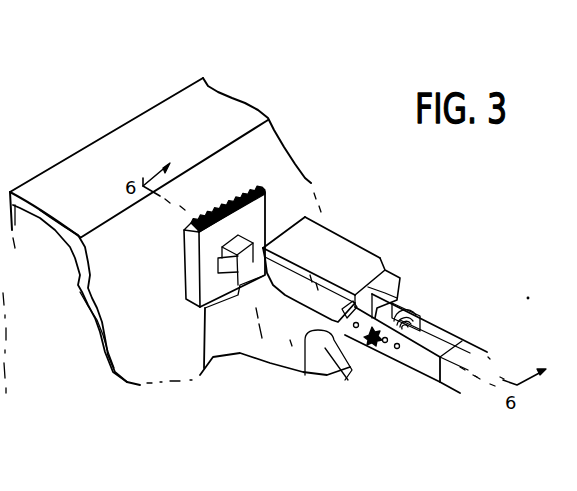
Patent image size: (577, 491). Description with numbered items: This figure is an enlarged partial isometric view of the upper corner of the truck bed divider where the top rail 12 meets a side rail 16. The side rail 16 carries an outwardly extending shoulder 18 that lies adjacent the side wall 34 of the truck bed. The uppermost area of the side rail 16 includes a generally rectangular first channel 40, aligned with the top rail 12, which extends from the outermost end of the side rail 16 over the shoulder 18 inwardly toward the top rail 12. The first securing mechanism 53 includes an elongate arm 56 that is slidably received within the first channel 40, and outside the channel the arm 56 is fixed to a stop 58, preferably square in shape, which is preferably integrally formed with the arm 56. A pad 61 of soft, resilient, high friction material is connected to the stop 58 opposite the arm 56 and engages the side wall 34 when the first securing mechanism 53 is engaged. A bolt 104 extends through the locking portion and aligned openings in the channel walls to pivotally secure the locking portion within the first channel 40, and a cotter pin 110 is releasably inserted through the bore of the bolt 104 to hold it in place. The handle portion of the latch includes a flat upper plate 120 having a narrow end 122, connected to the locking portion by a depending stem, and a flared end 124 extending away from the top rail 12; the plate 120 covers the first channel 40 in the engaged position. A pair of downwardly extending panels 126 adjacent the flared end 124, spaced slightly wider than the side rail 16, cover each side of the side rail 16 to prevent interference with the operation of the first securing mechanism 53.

The top rail 12 is at (440, 360).
The side rail 16 is at (442, 340).
The shoulder 18 is at (213, 340).
The side wall 34 is at (309, 182).
The first channel 40 is at (420, 311).
The first securing mechanism 53 is at (430, 227).
The arm 56 is at (218, 264).
The stop 58 is at (232, 237).
The pad 61 is at (226, 203).
The bolt 104 is at (407, 363).
The cotter pin 110 is at (375, 344).
The flat upper plate 120 is at (382, 226).
The narrow end 122 is at (387, 280).
The flared end 124 is at (333, 250).
The downwardly extending panels 126 is at (310, 304).